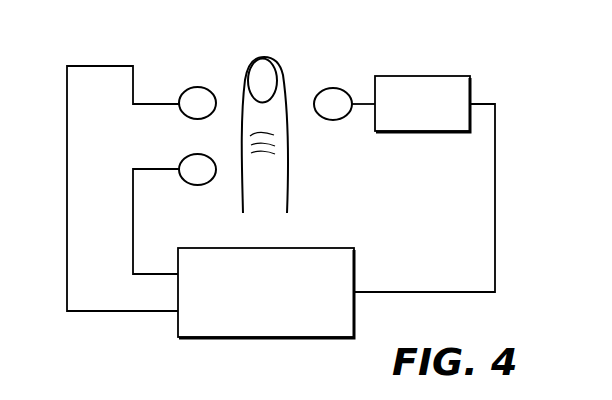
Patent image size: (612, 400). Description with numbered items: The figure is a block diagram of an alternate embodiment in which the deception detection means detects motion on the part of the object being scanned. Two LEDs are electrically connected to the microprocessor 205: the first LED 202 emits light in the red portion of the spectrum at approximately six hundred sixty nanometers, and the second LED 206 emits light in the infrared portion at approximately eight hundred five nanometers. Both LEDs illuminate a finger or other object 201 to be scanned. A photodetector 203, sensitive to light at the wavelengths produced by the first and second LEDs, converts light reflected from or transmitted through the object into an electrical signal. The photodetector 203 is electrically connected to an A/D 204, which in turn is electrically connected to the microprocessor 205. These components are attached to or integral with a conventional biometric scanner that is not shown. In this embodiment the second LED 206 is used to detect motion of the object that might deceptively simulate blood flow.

The finger or other object 201 is at (276, 60).
The first LED 202 is at (193, 87).
The photodetector 203 is at (333, 120).
The A/D 204 is at (471, 77).
The microprocessor 205 is at (355, 270).
The second LED 206 is at (200, 186).